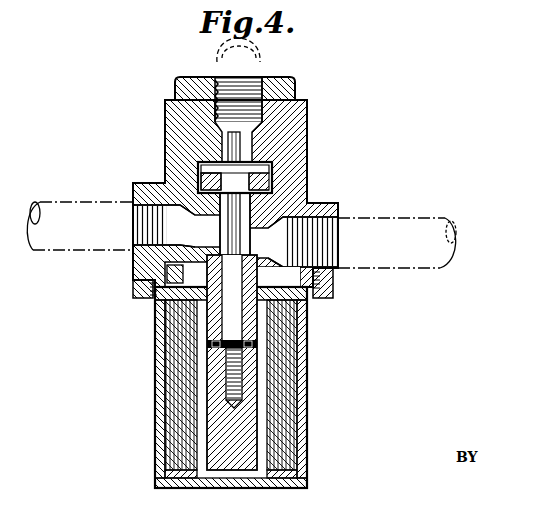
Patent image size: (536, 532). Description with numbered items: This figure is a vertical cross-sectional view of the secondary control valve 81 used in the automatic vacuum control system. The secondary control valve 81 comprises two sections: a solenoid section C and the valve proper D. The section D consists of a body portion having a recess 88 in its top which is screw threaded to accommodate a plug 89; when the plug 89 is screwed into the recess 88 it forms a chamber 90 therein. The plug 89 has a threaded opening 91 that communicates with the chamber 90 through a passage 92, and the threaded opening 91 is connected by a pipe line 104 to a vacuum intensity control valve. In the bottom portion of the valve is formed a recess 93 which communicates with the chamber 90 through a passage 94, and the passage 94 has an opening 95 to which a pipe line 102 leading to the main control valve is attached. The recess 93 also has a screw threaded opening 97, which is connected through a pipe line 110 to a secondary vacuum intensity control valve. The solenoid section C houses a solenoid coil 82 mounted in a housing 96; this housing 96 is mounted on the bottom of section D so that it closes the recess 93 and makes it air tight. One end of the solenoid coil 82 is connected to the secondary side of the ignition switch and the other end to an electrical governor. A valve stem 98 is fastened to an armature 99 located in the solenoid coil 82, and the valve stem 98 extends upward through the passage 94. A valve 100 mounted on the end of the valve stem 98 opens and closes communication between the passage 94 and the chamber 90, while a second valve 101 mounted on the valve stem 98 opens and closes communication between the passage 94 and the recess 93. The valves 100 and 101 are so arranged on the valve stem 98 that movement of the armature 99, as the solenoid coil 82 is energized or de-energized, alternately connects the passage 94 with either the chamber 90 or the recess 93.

The secondary control valve 81 is at (168, 86).
The solenoid coil 82 is at (287, 388).
The recess 88 is at (265, 163).
The plug 89 is at (266, 78).
The chamber 90 is at (262, 195).
The threaded opening 91 is at (250, 84).
The passage 92 is at (242, 144).
The recess 93 is at (178, 270).
The passage 94 is at (338, 207).
The opening 95 is at (140, 237).
The housing 96 is at (302, 347).
The screw threaded opening 97 is at (318, 250).
The valve stem 98 is at (221, 206).
The armature 99 is at (247, 440).
The valve 100 is at (200, 172).
The valve 101 is at (275, 277).
The pipe line 102 is at (81, 199).
The pipe line 104 is at (213, 71).
The pipe line 110 is at (418, 218).
The solenoid section C is at (148, 382).
The valve proper D is at (160, 128).